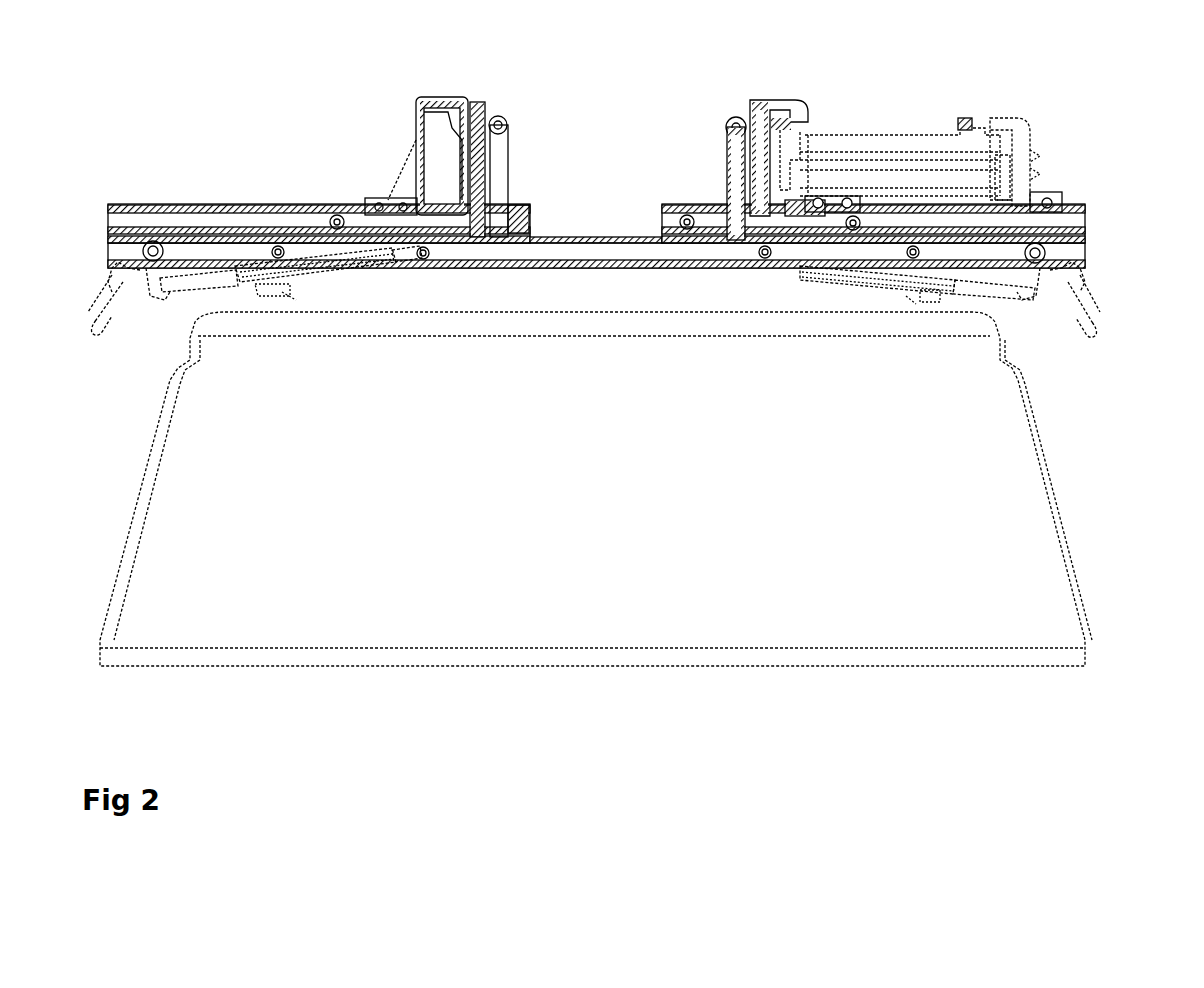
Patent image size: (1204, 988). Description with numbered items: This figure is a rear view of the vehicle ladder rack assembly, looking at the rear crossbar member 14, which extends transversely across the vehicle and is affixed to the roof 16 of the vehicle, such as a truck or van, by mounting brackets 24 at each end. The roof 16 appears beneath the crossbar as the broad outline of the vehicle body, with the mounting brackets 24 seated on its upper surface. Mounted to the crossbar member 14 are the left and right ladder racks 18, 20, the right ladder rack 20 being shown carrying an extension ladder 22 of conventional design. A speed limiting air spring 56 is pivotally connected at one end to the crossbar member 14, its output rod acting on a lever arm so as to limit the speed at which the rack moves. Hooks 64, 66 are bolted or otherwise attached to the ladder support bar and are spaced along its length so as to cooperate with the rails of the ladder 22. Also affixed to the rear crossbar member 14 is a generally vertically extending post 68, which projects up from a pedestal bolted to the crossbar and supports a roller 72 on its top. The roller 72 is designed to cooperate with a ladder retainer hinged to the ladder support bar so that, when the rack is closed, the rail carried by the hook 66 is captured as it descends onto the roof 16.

The rear crossbar member 14 is at (612, 240).
The roof 16 is at (578, 313).
The left ladder rack 18 is at (252, 145).
The right ladder rack 20 is at (1118, 120).
The extension ladder 22 is at (900, 135).
The mounting brackets 24 is at (302, 310).
The speed limiting air spring 56 is at (830, 283).
The hook 64 is at (998, 118).
The hook 66 is at (790, 102).
The post 68 is at (726, 190).
The roller 72 is at (735, 117).